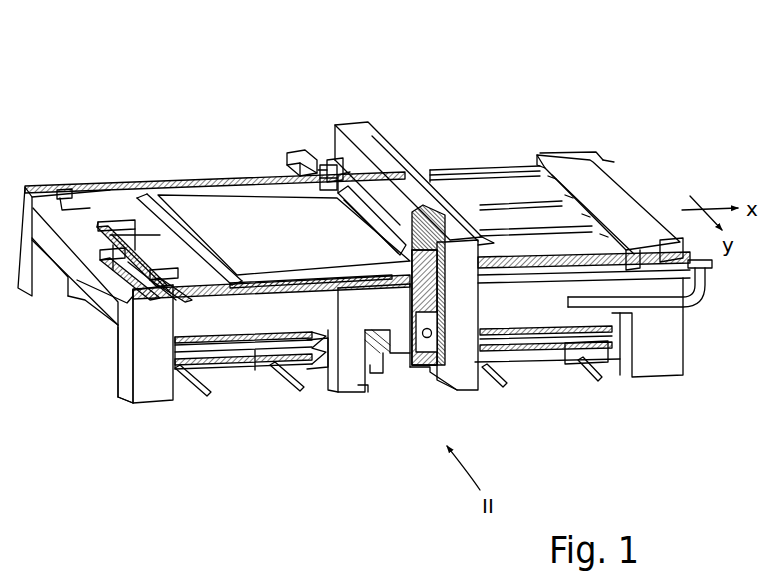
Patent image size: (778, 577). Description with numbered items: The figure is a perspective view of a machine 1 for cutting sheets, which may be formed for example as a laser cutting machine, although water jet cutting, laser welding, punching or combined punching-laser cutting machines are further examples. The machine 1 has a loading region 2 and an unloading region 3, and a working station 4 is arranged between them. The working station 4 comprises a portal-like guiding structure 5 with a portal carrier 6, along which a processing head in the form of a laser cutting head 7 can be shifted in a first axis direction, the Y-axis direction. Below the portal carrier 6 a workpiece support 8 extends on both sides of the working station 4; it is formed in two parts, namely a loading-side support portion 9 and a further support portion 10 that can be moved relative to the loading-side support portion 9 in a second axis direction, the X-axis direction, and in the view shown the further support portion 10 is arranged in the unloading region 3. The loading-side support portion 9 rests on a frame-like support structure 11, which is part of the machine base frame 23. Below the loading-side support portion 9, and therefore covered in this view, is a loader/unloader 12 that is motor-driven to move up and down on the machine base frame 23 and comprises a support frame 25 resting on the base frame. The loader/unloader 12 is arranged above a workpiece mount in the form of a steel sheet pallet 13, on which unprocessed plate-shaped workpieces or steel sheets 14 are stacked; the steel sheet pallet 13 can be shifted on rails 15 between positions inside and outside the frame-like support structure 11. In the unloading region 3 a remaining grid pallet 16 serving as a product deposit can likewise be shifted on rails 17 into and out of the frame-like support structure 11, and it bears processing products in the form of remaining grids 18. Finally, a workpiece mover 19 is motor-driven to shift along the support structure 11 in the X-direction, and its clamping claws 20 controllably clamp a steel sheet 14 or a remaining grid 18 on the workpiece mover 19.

The machine 1 is at (325, 76).
The loading region 2 is at (238, 106).
The unloading region 3 is at (490, 120).
The working station 4 is at (350, 110).
The portal-like guiding structure 5 is at (386, 118).
The portal carrier 6 is at (330, 156).
The laser cutting head 7 is at (418, 355).
The workpiece support 8 is at (283, 150).
The loading-side support portion 9 is at (220, 205).
The further support portion 10 is at (514, 163).
The frame-like support structure 11 is at (105, 368).
The loader/unloader 12 is at (110, 278).
The steel sheet pallet 13 is at (302, 368).
The steel sheet 14 is at (255, 368).
The rails 15 is at (192, 395).
The remaining grid pallet 16 is at (597, 352).
The rails 17 is at (498, 390).
The remaining grid 18 is at (560, 345).
The workpiece mover 19 is at (622, 209).
The clamping claws 20 is at (584, 158).
The machine base frame 23 is at (148, 388).
The support frame 25 is at (133, 222).